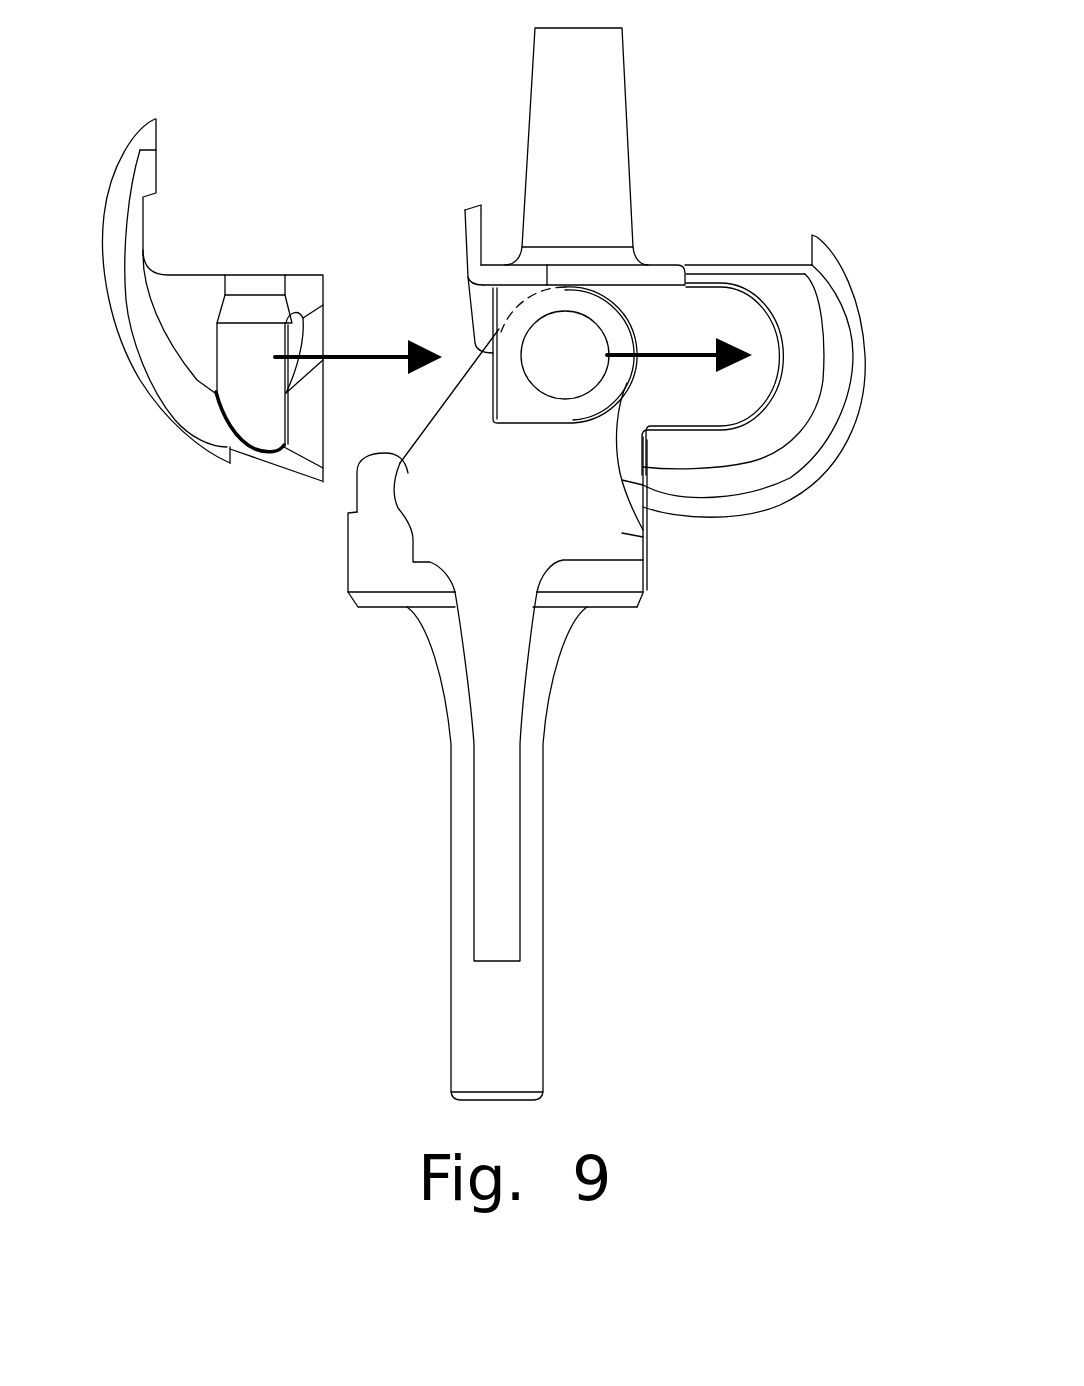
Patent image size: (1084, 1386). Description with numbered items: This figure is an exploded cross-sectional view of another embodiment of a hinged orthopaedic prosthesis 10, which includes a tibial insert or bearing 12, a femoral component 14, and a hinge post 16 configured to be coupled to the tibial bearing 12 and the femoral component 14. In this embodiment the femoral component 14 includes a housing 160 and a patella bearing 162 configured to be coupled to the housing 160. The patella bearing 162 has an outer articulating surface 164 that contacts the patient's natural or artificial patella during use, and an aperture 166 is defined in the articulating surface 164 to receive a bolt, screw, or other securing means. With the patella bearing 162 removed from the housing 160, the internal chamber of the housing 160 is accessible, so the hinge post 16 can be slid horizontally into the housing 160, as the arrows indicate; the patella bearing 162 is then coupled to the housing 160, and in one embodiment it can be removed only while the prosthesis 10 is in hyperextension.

The hinged orthopaedic prosthesis 10 is at (842, 170).
The tibial insert or bearing 12 is at (628, 575).
The femoral component 14 is at (830, 482).
The hinge post 16 is at (620, 535).
The housing 160 is at (735, 276).
The patella bearing 162 is at (155, 118).
The outer articulating surface 164 is at (135, 356).
The aperture 166 is at (250, 478).